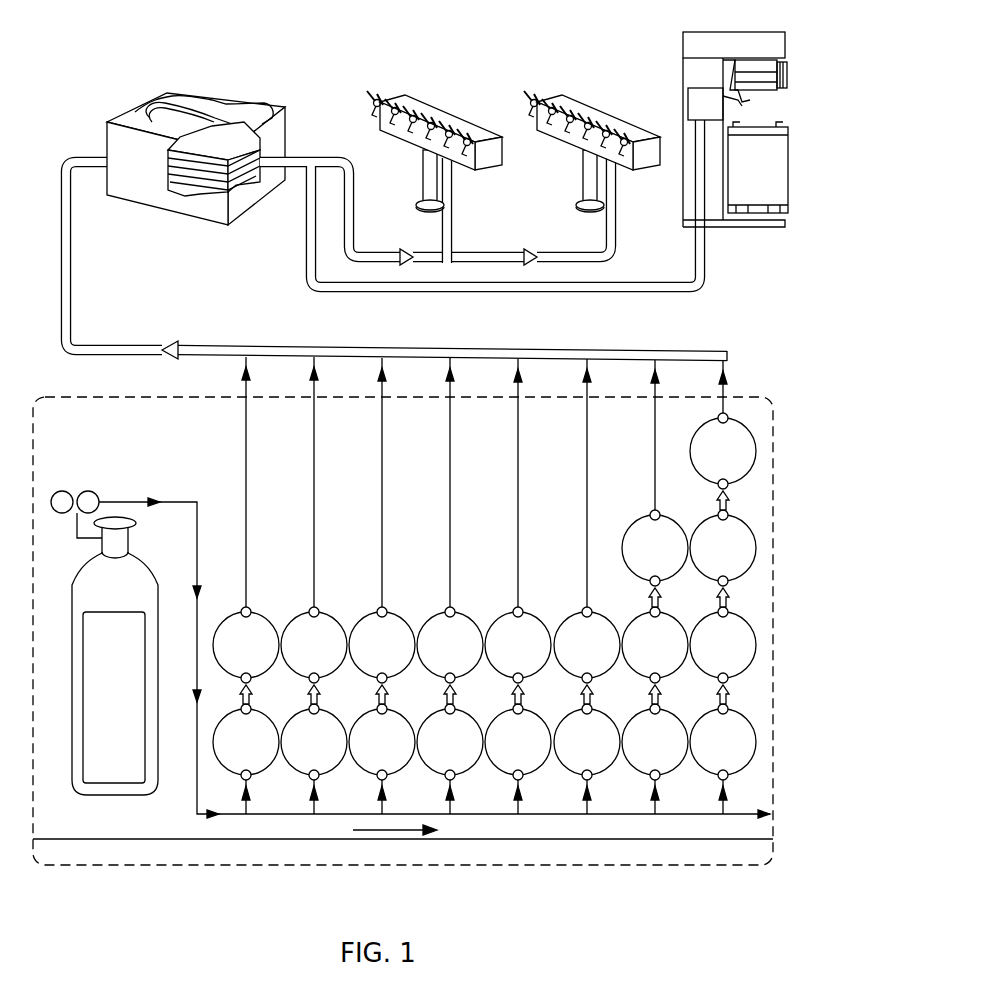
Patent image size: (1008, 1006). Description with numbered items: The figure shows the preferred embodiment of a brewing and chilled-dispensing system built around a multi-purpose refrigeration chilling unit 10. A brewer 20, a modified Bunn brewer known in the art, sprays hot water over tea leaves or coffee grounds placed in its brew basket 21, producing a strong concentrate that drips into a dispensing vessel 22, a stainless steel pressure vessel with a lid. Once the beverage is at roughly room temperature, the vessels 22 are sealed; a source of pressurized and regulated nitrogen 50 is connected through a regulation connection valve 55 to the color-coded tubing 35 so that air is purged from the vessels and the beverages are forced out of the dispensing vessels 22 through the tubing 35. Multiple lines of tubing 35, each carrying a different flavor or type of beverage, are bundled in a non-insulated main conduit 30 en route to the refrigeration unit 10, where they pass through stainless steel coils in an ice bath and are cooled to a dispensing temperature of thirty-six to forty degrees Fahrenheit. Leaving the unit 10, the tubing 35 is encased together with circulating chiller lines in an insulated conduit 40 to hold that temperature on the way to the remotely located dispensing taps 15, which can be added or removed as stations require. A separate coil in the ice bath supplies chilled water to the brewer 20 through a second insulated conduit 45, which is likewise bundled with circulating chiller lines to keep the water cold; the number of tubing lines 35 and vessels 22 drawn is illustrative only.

The multi-purpose refrigeration chilling unit 10 is at (212, 95).
The dispensing taps 15 is at (440, 102).
The brewer 20 is at (760, 113).
The brew basket 21 is at (790, 68).
The dispensing vessel 22 is at (790, 165).
The non-insulated conduit 30 is at (197, 346).
The color-coded tubing 35 is at (248, 447).
The insulated conduit 40 is at (357, 215).
The insulated conduit 45 is at (361, 292).
The source of nitrogen 50 is at (132, 560).
The regulation connection valve 55 is at (90, 490).